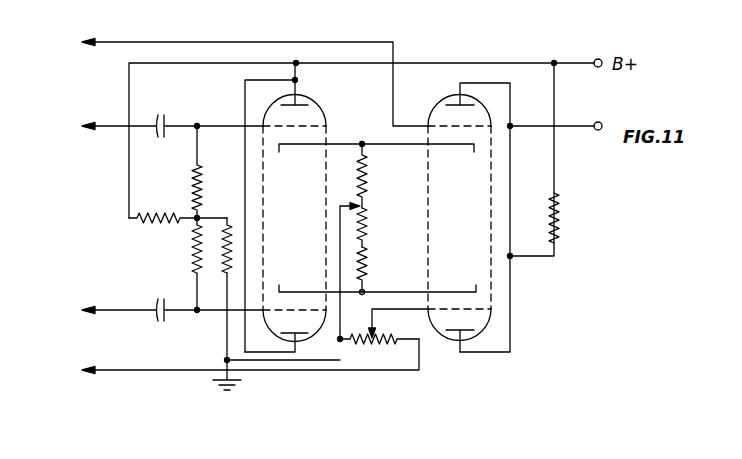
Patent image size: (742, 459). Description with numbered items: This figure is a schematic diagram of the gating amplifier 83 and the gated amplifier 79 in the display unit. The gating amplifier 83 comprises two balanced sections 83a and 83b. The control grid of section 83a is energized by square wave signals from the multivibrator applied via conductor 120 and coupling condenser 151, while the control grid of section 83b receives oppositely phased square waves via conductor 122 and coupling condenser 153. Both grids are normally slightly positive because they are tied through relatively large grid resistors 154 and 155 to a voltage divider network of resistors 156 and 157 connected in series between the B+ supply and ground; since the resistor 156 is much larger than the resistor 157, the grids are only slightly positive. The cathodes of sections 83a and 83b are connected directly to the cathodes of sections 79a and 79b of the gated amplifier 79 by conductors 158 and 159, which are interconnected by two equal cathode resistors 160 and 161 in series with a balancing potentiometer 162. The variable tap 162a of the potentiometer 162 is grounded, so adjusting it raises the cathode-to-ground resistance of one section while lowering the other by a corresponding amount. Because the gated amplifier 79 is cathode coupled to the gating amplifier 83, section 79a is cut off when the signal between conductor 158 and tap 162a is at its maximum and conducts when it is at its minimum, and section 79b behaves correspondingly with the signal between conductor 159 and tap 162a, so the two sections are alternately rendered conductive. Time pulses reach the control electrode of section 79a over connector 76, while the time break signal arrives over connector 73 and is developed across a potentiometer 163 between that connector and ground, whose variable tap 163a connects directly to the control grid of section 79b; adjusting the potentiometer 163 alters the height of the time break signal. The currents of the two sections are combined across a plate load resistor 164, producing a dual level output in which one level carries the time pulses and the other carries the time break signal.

The connector 76 is at (150, 41).
The conductor 120 is at (116, 124).
The coupling condenser 151 is at (151, 117).
The conductor 122 is at (121, 304).
The coupling condenser 153 is at (152, 303).
The connector 73 is at (144, 367).
The grid resistor 154 is at (191, 171).
The grid resistor 155 is at (189, 248).
The resistor 156 is at (173, 209).
The resistor 157 is at (232, 224).
The gating amplifier 83 is at (352, 82).
The section of gating amplifier 83a is at (259, 98).
The section of gating amplifier 83b is at (253, 330).
The conductor 158 is at (347, 141).
The conductor 159 is at (416, 290).
The cathode resistor 160 is at (368, 174).
The cathode resistor 161 is at (362, 264).
The balancing potentiometer 162 is at (392, 229).
The variable tap 162a is at (355, 196).
The potentiometer 163 is at (378, 339).
The variable tap 163a is at (412, 332).
The gated amplifier 79 is at (543, 91).
The section of gated amplifier 79a is at (430, 97).
The section of gated amplifier 79b is at (556, 340).
The plate load resistor 164 is at (573, 218).